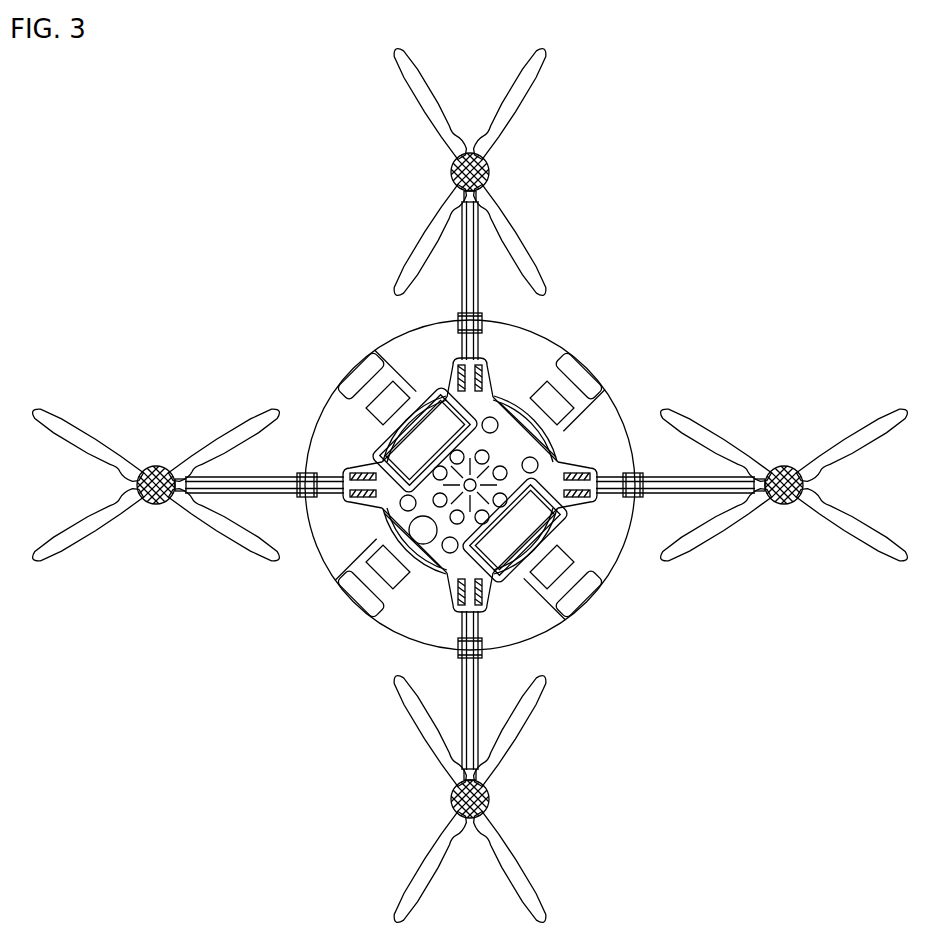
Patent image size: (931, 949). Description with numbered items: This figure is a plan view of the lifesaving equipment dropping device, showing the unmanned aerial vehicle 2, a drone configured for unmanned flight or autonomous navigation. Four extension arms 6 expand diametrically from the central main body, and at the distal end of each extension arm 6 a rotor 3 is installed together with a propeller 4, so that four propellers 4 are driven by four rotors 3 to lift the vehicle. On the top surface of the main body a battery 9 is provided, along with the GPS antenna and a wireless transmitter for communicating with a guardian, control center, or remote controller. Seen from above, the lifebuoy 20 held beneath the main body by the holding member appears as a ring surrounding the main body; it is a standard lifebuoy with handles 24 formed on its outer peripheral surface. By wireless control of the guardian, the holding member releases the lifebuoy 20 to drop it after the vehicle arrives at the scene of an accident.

The unmanned aerial vehicle 2 is at (353, 423).
The rotor 3 is at (452, 163).
The propeller 4 is at (437, 112).
The extension arm 6 is at (478, 260).
The battery 9 is at (378, 345).
The lifebuoy 20 is at (627, 440).
The handle 24 is at (587, 597).